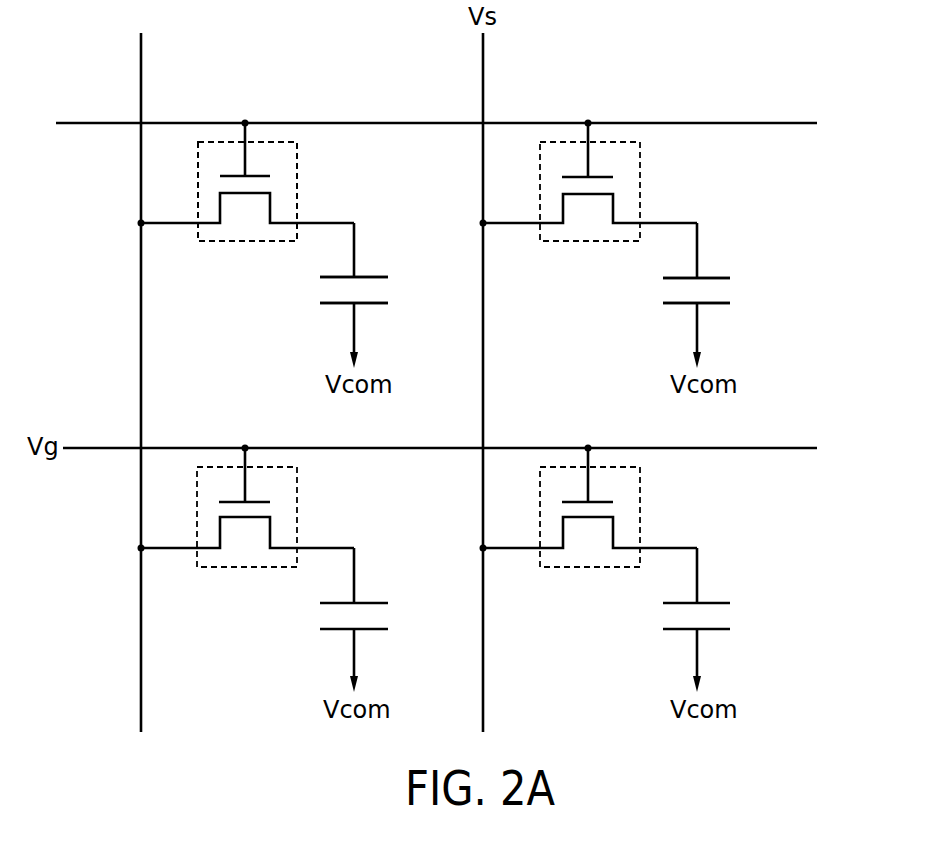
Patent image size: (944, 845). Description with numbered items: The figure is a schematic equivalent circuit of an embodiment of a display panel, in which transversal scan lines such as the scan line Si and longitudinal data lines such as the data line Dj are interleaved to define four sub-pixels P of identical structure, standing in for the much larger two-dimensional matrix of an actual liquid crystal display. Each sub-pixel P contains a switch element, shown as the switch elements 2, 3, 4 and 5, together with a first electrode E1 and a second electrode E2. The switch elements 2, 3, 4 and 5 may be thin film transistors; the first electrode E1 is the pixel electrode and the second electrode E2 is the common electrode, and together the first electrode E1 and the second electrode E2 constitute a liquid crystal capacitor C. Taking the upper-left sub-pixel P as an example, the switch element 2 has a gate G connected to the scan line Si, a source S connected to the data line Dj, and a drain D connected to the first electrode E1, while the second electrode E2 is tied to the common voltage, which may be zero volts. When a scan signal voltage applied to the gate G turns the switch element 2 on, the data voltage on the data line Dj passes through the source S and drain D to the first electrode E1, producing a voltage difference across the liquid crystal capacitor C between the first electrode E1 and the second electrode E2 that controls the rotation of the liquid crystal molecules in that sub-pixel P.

The switch element 2 is at (300, 178).
The switch element 3 is at (642, 178).
The switch element 4 is at (300, 502).
The switch element 5 is at (643, 503).
The sub-pixel P is at (288, 126).
The liquid crystal capacitor C is at (382, 290).
The first electrode E1 is at (356, 276).
The second electrode E2 is at (338, 306).
The gate G is at (258, 159).
The source S is at (214, 210).
The drain D is at (280, 210).
The data line Dj is at (154, 382).
The scan line Si is at (436, 110).